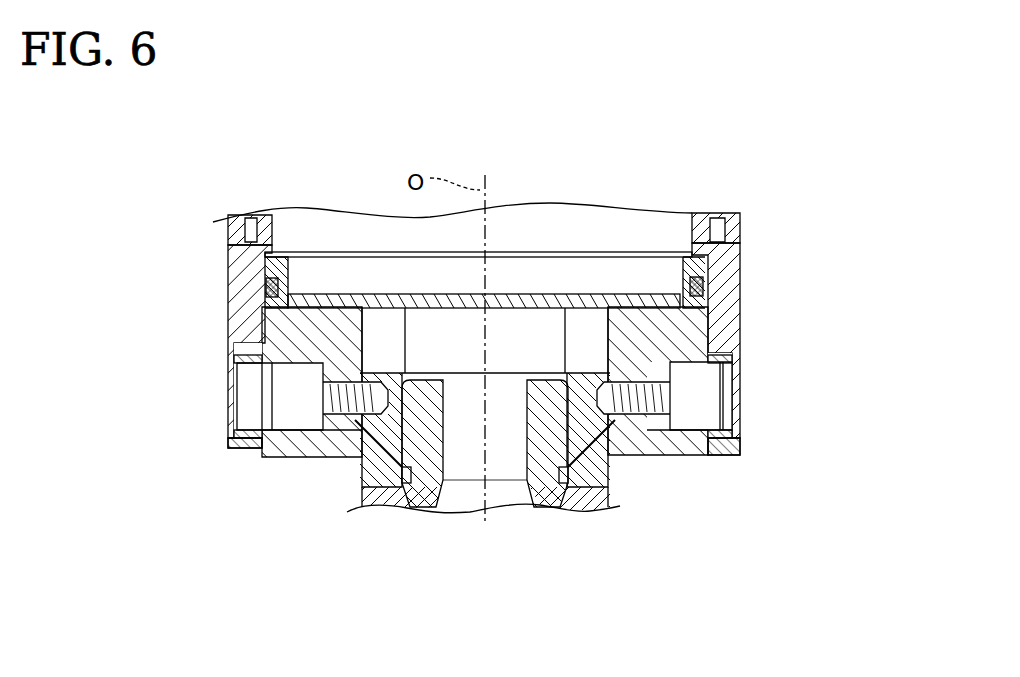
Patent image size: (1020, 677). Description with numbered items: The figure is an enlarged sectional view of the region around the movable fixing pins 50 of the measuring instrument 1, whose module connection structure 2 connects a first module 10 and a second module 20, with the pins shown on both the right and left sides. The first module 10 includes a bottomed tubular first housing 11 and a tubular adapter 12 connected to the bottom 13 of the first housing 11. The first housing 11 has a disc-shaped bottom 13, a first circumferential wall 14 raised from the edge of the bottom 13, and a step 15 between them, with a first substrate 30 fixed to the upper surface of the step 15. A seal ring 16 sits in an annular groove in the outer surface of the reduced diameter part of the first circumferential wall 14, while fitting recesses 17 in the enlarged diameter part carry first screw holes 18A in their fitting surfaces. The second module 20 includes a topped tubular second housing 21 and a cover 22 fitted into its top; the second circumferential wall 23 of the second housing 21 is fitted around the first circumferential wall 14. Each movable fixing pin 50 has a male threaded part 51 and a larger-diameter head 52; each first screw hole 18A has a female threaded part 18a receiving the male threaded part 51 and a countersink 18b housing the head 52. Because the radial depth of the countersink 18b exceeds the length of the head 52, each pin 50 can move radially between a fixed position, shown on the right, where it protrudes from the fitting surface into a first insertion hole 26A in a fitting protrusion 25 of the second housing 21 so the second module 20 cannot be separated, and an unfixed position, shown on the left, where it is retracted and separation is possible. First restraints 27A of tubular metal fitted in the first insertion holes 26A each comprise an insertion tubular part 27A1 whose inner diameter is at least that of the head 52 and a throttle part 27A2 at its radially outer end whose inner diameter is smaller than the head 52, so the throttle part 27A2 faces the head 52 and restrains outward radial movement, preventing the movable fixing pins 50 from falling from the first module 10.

The measuring instrument 1 is at (201, 204).
The module connection structure 2 is at (137, 358).
The first module 10 is at (182, 497).
The first housing 11 is at (285, 461).
The adapter 12 is at (356, 500).
The bottom 13 is at (610, 453).
The first circumferential wall 14 is at (700, 268).
The step 15 is at (633, 306).
The seal ring 16 is at (706, 289).
The fitting recesses 17 is at (233, 448).
The female threaded part 18a is at (647, 413).
The countersink 18b is at (623, 400).
The first screw holes 18A is at (745, 540).
The second module 20 is at (115, 210).
The second housing 21 is at (229, 285).
The cover 22 is at (229, 232).
The second circumferential wall 23 is at (228, 320).
The fitting protrusions 25 is at (232, 447).
The first insertion holes 26A is at (229, 413).
The first restraints 27A is at (230, 362).
The insertion tubular part 27A1 is at (742, 383).
The throttle part 27A2 is at (742, 373).
The first substrate 30 is at (508, 300).
The movable fixing pins 50 is at (232, 393).
The male threaded part 51 is at (657, 363).
The head 52 is at (690, 363).